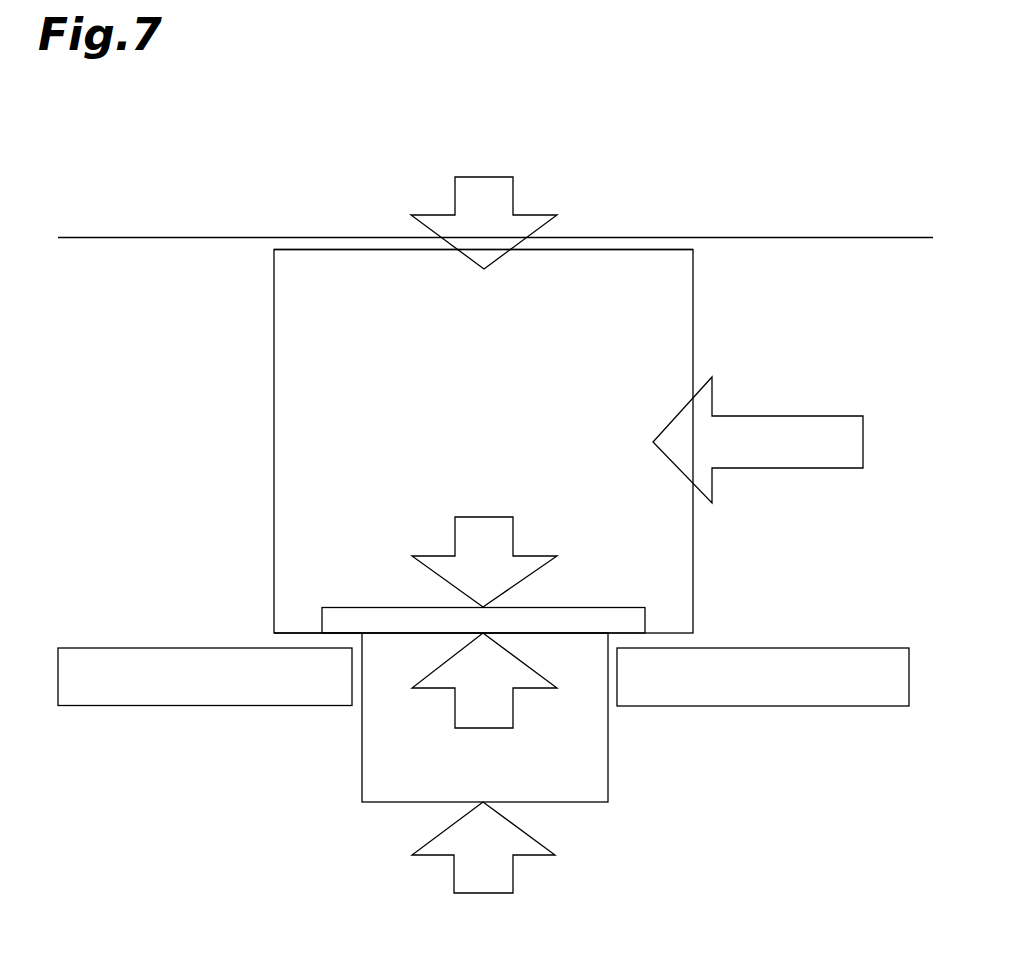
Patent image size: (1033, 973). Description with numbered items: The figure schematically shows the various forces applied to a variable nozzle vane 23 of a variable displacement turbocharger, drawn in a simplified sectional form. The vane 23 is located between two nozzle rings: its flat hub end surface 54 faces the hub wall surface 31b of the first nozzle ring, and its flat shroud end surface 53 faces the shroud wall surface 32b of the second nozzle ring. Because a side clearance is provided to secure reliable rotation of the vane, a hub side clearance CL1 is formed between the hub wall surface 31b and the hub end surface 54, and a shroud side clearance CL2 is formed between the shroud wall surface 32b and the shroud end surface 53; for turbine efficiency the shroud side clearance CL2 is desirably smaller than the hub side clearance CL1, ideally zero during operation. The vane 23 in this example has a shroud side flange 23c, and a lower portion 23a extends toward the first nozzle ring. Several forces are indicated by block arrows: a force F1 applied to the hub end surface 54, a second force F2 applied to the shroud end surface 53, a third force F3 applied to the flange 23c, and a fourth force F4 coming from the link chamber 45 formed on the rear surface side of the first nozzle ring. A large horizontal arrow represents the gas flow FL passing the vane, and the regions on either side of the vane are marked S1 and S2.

The variable nozzle vane 23 is at (696, 285).
The lower protrusion of body 23a is at (366, 757).
The shroud side flange 23c is at (356, 606).
The hub wall surface 31b is at (166, 648).
The shroud wall surface 32b is at (161, 238).
The link chamber 45 is at (396, 897).
The shroud end surface 53 is at (352, 250).
The hub end surface 54 is at (297, 633).
The hub side clearance CL1 is at (697, 640).
The shroud side clearance CL2 is at (267, 245).
The force F1 is at (513, 708).
The second force F2 is at (513, 195).
The third force F3 is at (513, 533).
The fourth force F4 is at (513, 875).
The gas flow FL is at (795, 416).
The space 1 S1 is at (166, 538).
The space 2 S2 is at (838, 538).